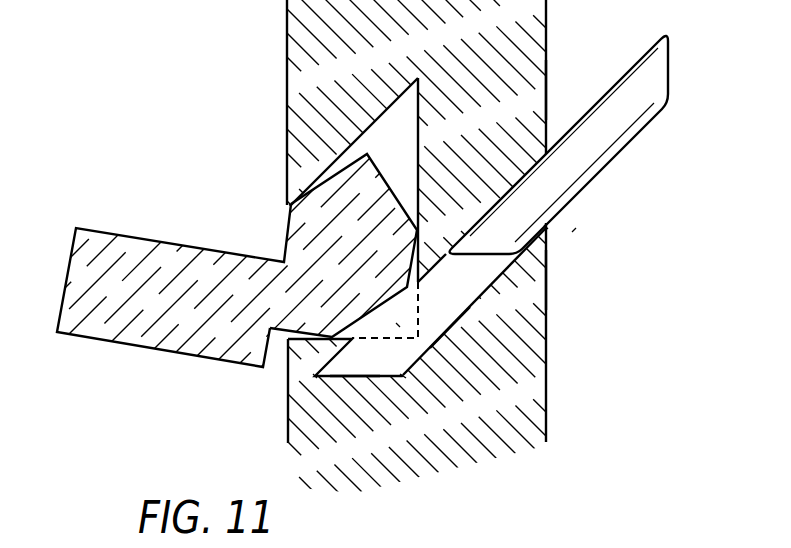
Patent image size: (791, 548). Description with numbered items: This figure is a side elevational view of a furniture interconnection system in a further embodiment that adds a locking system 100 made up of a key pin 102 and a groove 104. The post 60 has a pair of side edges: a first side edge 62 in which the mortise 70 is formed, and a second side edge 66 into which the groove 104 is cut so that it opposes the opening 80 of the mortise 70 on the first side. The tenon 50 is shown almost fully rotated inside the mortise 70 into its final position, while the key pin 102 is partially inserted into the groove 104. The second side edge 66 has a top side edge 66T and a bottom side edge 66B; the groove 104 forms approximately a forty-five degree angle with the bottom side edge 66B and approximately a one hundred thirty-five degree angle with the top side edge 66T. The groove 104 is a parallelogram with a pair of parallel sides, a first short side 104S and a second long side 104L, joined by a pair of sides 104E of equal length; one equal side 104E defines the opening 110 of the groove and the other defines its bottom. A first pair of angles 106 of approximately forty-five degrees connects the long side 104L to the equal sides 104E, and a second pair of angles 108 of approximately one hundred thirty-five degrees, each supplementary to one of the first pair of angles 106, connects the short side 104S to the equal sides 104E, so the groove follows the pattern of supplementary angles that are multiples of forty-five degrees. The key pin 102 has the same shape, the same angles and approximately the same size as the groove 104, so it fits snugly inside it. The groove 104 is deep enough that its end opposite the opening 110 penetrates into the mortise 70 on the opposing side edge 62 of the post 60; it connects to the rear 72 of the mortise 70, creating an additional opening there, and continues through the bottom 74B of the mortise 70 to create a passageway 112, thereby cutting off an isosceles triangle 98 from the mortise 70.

The tenon 50 is at (373, 185).
The post 60 is at (287, 53).
The side edge 62 is at (287, 104).
The second side edge 66 is at (564, 29).
The top side edge 66T is at (547, 92).
The bottom side edge 66B is at (547, 278).
The mortise 70 is at (404, 106).
The rear of the mortise 72 is at (421, 167).
The bottom of the mortise 74B is at (288, 378).
The opening of the mortise 80 is at (290, 197).
The isosceles triangle 98 is at (370, 318).
The locking system 100 is at (580, 235).
The key pin 102 is at (590, 158).
The groove 104 is at (498, 285).
The first short side 104S is at (456, 332).
The second long side 104L is at (338, 346).
The sides of equal length 104E is at (352, 388).
The first pair of angles 106 is at (315, 378).
The second pair of angles 108 is at (404, 378).
The opening of the groove 110 is at (548, 227).
The passageway 112 is at (398, 325).